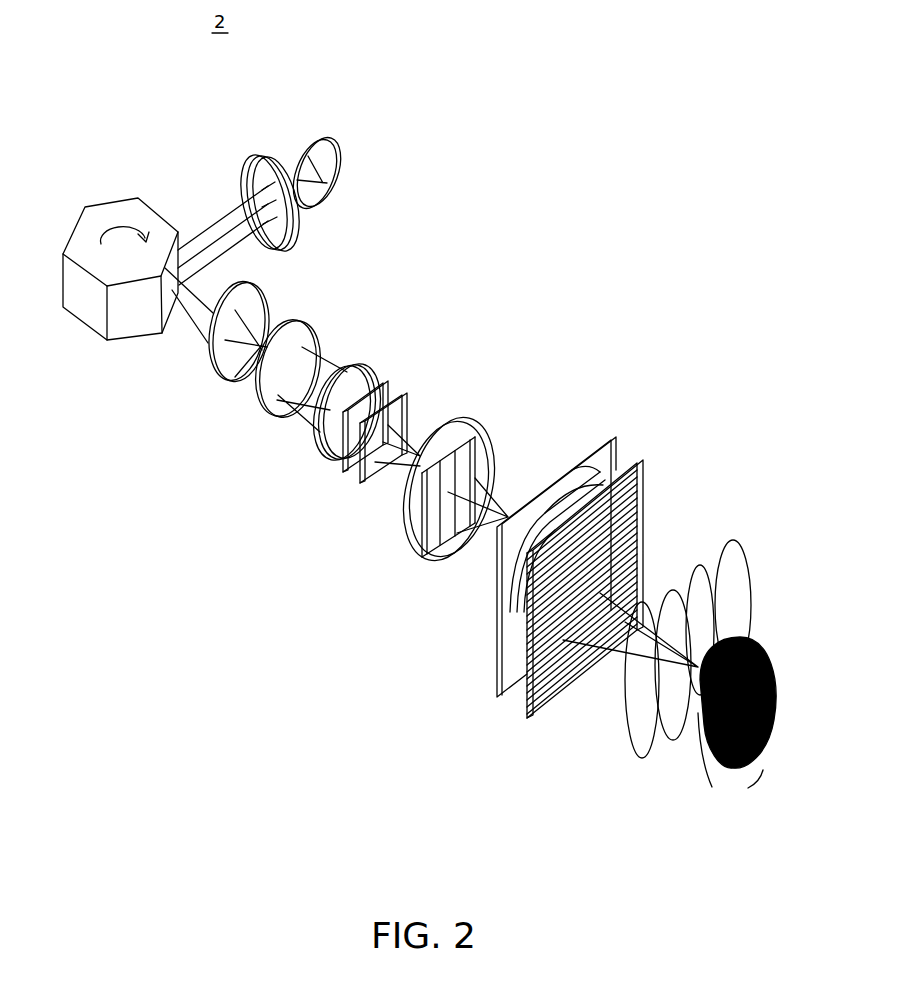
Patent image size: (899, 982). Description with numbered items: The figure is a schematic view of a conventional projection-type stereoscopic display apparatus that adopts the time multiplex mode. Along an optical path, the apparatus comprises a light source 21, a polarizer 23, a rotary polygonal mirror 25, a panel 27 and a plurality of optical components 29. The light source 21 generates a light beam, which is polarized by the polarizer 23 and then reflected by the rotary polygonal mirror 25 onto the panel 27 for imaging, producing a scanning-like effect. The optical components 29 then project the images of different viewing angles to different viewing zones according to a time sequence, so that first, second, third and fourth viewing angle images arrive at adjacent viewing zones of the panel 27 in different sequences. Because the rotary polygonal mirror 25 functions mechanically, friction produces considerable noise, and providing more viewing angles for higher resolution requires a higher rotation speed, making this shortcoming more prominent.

The light source 21 is at (323, 143).
The polarizer 23 is at (243, 188).
The rotary polygonal mirror 25 is at (106, 203).
The panel 27 is at (352, 368).
The optical components 29 is at (653, 458).